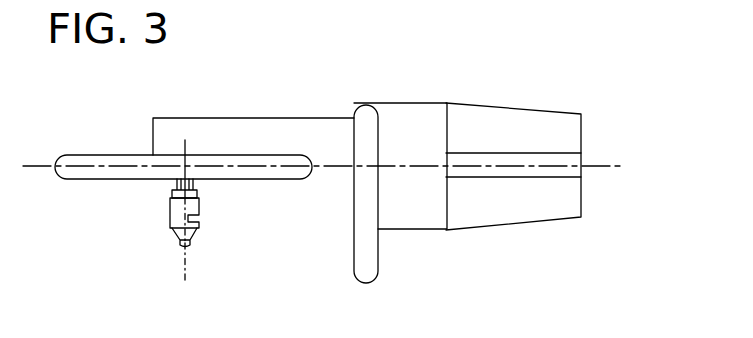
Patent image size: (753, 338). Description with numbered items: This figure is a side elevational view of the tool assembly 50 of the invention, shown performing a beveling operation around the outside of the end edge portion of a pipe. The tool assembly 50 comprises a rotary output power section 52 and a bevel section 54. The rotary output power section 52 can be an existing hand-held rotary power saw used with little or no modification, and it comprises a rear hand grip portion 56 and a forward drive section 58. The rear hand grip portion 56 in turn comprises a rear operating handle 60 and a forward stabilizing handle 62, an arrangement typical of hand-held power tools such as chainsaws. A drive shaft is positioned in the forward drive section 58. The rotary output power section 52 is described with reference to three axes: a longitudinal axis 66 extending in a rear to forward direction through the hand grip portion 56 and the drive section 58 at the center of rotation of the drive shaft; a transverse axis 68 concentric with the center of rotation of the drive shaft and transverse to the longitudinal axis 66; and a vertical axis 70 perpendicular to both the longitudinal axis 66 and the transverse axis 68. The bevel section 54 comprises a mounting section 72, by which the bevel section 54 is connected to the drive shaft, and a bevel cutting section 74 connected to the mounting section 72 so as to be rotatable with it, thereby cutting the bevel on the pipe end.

The tool assembly 50 is at (406, 80).
The rotary output power section 52 is at (202, 110).
The bevel section 54 is at (176, 211).
The rear hand grip portion 56 is at (487, 112).
The forward drive section 58 is at (248, 125).
The rear operating handle 60 is at (517, 160).
The forward stabilizing handle 62 is at (368, 262).
The longitudinal axis 66 is at (603, 165).
The transverse axis 68 is at (182, 273).
The vertical axis 70 is at (184, 167).
The mounting section 72 is at (176, 186).
The bevel cutting section 74 is at (172, 234).